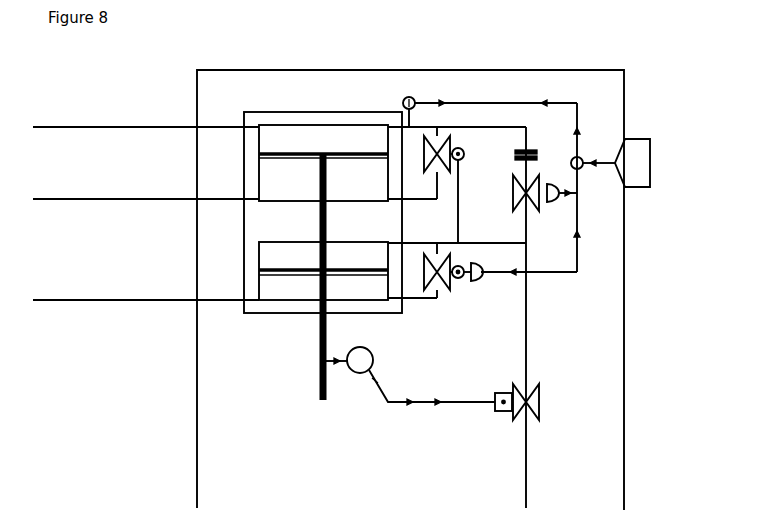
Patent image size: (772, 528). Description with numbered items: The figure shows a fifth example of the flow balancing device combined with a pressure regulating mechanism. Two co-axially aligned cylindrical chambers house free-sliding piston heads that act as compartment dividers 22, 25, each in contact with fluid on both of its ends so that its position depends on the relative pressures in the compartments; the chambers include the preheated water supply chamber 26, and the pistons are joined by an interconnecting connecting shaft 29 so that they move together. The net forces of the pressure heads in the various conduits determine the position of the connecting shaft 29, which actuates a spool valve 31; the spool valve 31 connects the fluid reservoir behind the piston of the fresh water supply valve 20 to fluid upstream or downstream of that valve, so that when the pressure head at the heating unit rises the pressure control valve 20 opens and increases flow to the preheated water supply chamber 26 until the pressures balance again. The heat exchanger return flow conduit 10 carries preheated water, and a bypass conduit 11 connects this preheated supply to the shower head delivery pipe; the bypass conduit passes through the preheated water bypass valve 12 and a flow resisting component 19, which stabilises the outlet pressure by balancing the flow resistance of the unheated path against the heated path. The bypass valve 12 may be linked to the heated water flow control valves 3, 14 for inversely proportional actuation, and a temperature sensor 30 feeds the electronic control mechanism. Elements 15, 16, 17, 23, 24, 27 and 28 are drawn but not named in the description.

The flow control valve 3 is at (441, 130).
The heat exchanger return flow conduit 10 is at (529, 494).
The bypass conduit 11 is at (516, 123).
The preheated water bypass valve 12 is at (540, 172).
The flow control valve 14 is at (451, 292).
The pressure sensor 15 is at (459, 177).
The control unit 16 is at (656, 152).
The signal lines 17 is at (488, 280).
The flow resisting component 19 is at (534, 145).
The fresh water supply valve 20 is at (539, 396).
The compartment divider 22 is at (256, 154).
The cylinder chamber 23 is at (272, 182).
The cylinder 24 is at (297, 137).
The compartment divider 25 is at (256, 272).
The preheated water supply chamber 26 is at (278, 253).
The housing 27 is at (252, 303).
The cylinder chamber 28 is at (280, 292).
The connecting shaft 29 is at (316, 230).
The temperature sensor 30 is at (403, 97).
The spool valve 31 is at (318, 363).